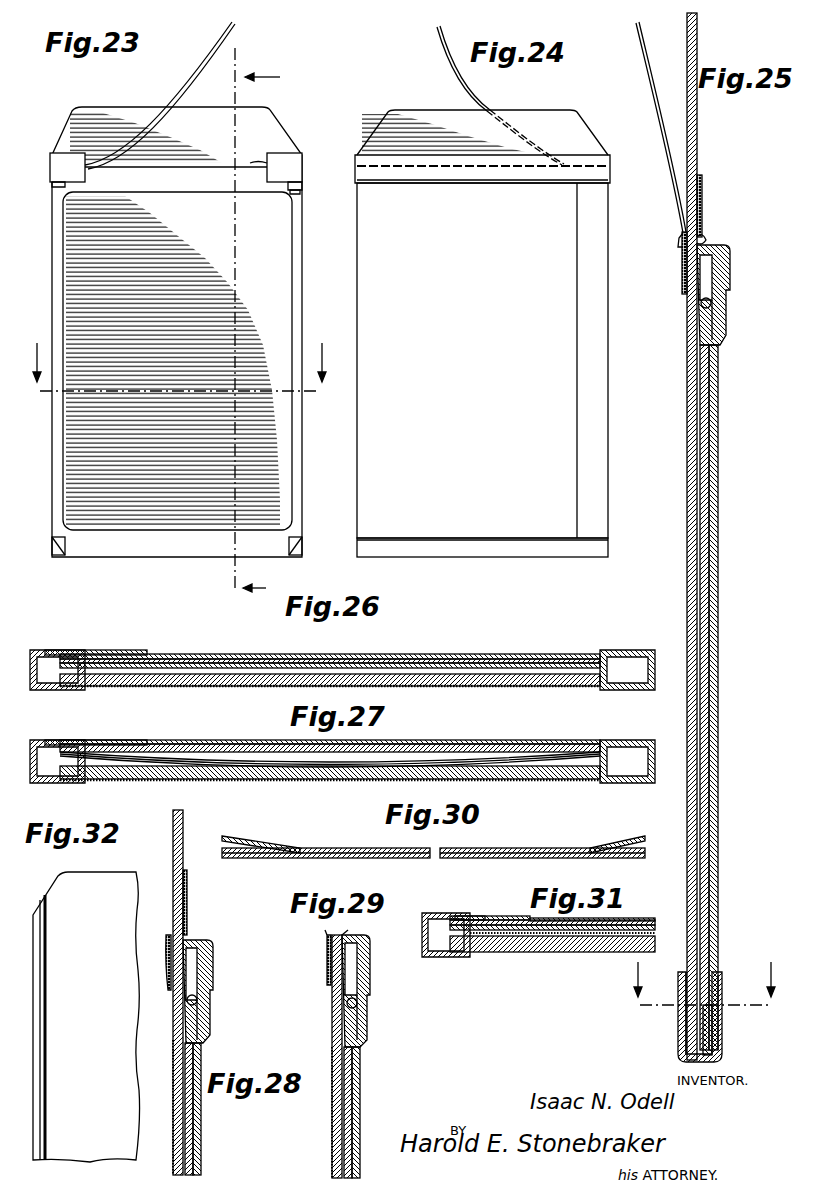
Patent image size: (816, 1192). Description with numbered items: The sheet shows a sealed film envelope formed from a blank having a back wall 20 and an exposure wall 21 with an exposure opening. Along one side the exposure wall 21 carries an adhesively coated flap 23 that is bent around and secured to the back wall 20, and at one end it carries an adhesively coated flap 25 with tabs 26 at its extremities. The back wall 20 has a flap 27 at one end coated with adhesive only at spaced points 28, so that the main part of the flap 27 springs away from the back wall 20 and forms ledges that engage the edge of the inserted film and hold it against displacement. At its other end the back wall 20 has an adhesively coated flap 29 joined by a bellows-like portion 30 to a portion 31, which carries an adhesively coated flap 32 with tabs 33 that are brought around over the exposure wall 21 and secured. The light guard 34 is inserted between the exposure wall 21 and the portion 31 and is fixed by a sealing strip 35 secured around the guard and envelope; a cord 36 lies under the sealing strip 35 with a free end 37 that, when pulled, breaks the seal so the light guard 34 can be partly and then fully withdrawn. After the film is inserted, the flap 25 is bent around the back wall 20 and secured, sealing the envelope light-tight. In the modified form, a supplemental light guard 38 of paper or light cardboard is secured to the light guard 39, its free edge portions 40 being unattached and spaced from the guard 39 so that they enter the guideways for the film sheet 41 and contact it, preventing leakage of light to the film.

In FIG. 24, the back wall 20 is at (482, 370).
In FIG. 25, the back wall 20 is at (719, 905).
In FIG. 26, the back wall 20 is at (455, 656).
In FIG. 27, the back wall 20 is at (453, 744).
In FIG. 31, the back wall 20 is at (560, 918).
In FIG. 28, the back wall 20 is at (201, 1166).
In FIG. 29, the back wall 20 is at (360, 1145).
In FIG. 23, the exposure wall 21 is at (212, 185).
In FIG. 25, the exposure wall 21 is at (687, 1014).
In FIG. 26, the exposure wall 21 is at (112, 689).
In FIG. 27, the exposure wall 21 is at (138, 783).
In FIG. 31, the exposure wall 21 is at (512, 958).
In FIG. 28, the exposure wall 21 is at (174, 1000).
In FIG. 29, the exposure wall 21 is at (334, 1015).
In FIG. 24, the adhesively coated flap 23 is at (581, 300).
In FIG. 26, the adhesively coated flap 23 is at (113, 651).
In FIG. 27, the adhesively coated flap 23 is at (57, 742).
In FIG. 31, the adhesively coated flap 23 is at (500, 917).
In FIG. 23, the adhesively coated flap 25 is at (251, 330).
In FIG. 24, the adhesively coated flap 25 is at (562, 549).
In FIG. 25, the adhesively coated flap 25 is at (720, 976).
In FIG. 26, the adhesively coated flap 25 is at (188, 655).
In FIG. 27, the adhesively coated flap 25 is at (180, 745).
In FIG. 31, the adhesively coated flap 25 is at (440, 913).
In FIG. 23, the tabs 26 is at (318, 555).
In FIG. 25, the tabs 26 is at (680, 1030).
In FIG. 26, the tabs 26 is at (58, 690).
In FIG. 27, the tabs 26 is at (58, 783).
In FIG. 31, the tabs 26 is at (458, 958).
In FIG. 25, the flap 27 is at (740, 1032).
In FIG. 27, the flap 27 is at (226, 752).
In FIG. 27, the spaced points 28 is at (92, 749).
In FIG. 25, the adhesively coated flap 29 is at (730, 270).
In FIG. 28, the adhesively coated flap 29 is at (215, 964).
In FIG. 29, the adhesively coated flap 29 is at (372, 956).
In FIG. 25, the bellows-like or corrugated portion 30 is at (706, 306).
In FIG. 28, the bellows-like or corrugated portion 30 is at (197, 1005).
In FIG. 29, the bellows-like or corrugated portion 30 is at (347, 1003).
In FIG. 25, the portion 31 is at (697, 276).
In FIG. 28, the portion 31 is at (186, 985).
In FIG. 29, the portion 31 is at (336, 966).
In FIG. 24, the adhesively coated flap 32 is at (425, 186).
In FIG. 25, the adhesively coated flap 32 is at (728, 312).
In FIG. 28, the adhesively coated flap 32 is at (213, 1002).
In FIG. 29, the adhesively coated flap 32 is at (372, 1012).
In FIG. 23, the tabs 33 is at (300, 192).
In FIG. 23, the light guard 34 is at (284, 133).
In FIG. 24, the light guard 34 is at (530, 118).
In FIG. 25, the light guard 34 is at (699, 163).
In FIG. 26, the light guard 34 is at (525, 687).
In FIG. 27, the light guard 34 is at (212, 782).
In FIG. 28, the light guard 34 is at (174, 1160).
In FIG. 29, the light guard 34 is at (337, 1056).
In FIG. 23, the sealing strip 35 is at (299, 171).
In FIG. 24, the sealing strip 35 is at (545, 178).
In FIG. 25, the sealing strip 35 is at (703, 212).
In FIG. 28, the sealing strip 35 is at (210, 940).
In FIG. 29, the sealing strip 35 is at (373, 980).
In FIG. 24, the cord 36 is at (492, 168).
In FIG. 25, the cord 36 is at (705, 240).
In FIG. 23, the free end 37 is at (200, 82).
In FIG. 24, the free end 37 is at (452, 68).
In FIG. 25, the free end 37 is at (653, 78).
In FIG. 30, the supplemental light guard 38 is at (402, 848).
In FIG. 32, the supplemental light guard 38 is at (125, 880).
In FIG. 30, the light guard 39 is at (406, 858).
In FIG. 31, the light guard 39 is at (574, 954).
In FIG. 30, the free edge portions 40 is at (245, 840).
In FIG. 31, the free edge portions 40 is at (458, 916).
In FIG. 32, the free edge portions 40 is at (46, 992).
In FIG. 25, the film sheet 41 is at (712, 378).
In FIG. 26, the film sheet 41 is at (528, 661).
In FIG. 31, the film sheet 41 is at (612, 920).
In FIG. 28, the film sheet 41 is at (200, 1130).
In FIG. 29, the film sheet 41 is at (355, 1100).